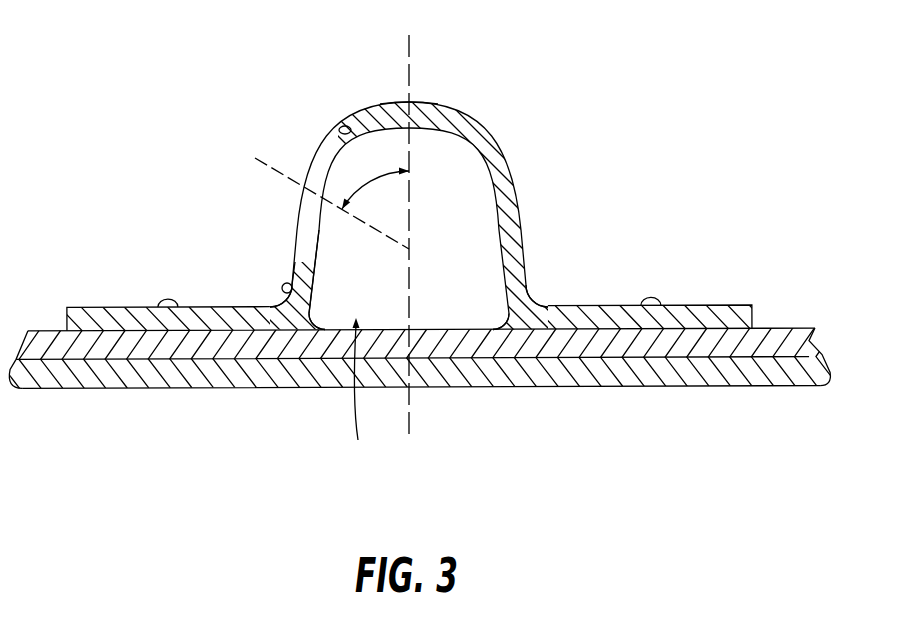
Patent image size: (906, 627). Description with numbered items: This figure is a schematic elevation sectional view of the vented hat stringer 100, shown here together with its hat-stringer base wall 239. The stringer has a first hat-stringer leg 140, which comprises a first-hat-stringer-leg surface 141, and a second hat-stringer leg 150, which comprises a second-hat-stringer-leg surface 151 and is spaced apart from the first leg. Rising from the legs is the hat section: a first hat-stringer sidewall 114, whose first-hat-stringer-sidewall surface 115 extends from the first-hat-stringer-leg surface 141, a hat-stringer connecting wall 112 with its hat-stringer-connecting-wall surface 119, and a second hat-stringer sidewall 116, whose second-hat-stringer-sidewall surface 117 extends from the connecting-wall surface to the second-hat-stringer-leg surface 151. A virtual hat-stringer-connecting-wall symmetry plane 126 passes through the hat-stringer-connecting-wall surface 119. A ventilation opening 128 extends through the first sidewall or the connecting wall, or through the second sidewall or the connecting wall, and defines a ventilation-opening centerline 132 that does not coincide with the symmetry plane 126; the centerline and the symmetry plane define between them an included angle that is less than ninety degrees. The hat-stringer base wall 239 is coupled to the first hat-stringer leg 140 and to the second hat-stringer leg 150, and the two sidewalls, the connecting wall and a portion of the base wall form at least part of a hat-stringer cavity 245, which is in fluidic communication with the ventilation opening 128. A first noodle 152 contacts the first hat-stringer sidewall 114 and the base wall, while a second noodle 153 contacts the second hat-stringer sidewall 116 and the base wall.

The vented hat stringer 100 is at (660, 110).
The hat-stringer connecting wall 112 is at (512, 147).
The first hat-stringer sidewall 114 is at (293, 272).
The first-hat-stringer-sidewall surface 115 is at (314, 272).
The second hat-stringer sidewall 116 is at (521, 214).
The second-hat-stringer-sidewall surface 117 is at (513, 293).
The hat-stringer-connecting-wall surface 119 is at (420, 108).
The virtual hat-stringer-connecting-wall symmetry plane 126 is at (412, 421).
The ventilation opening 128 is at (338, 128).
The ventilation-opening centerline 132 is at (256, 184).
The first hat-stringer leg 140 is at (122, 317).
The first-hat-stringer-leg surface 141 is at (168, 306).
The second hat-stringer leg 150 is at (698, 306).
The second-hat-stringer-leg surface 151 is at (651, 306).
The first noodle 152 is at (316, 332).
The second noodle 153 is at (509, 333).
The hat-stringer base wall 239 is at (258, 340).
The hat-stringer cavity 245 is at (356, 393).